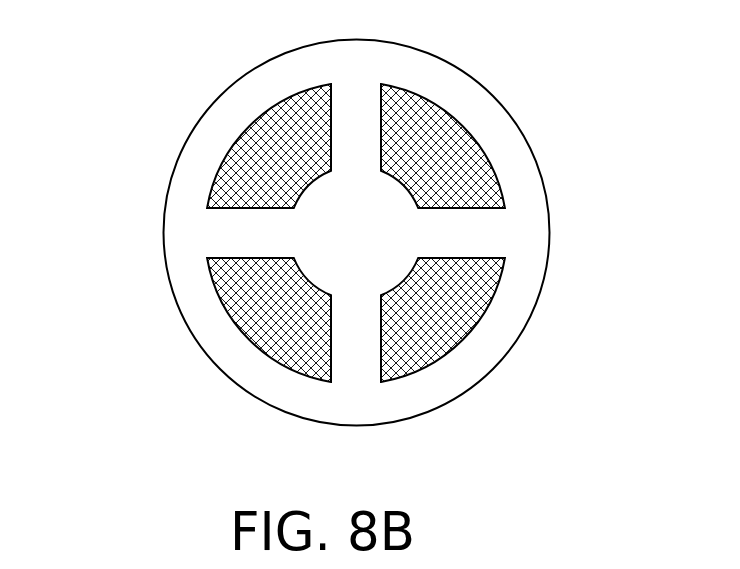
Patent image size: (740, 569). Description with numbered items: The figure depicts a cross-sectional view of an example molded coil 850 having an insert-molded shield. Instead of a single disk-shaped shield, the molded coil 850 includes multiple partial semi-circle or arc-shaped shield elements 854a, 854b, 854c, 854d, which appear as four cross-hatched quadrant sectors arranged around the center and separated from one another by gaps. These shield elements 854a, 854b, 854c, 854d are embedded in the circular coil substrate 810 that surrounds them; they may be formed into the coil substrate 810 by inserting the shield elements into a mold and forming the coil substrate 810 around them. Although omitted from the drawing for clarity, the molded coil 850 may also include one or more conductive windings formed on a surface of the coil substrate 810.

The molded coil 850 is at (72, 226).
The coil substrate 810 is at (545, 167).
The arc-shaped shield element 854a is at (250, 125).
The arc-shaped shield element 854b is at (464, 122).
The arc-shaped shield element 854c is at (466, 338).
The arc-shaped shield element 854d is at (250, 345).